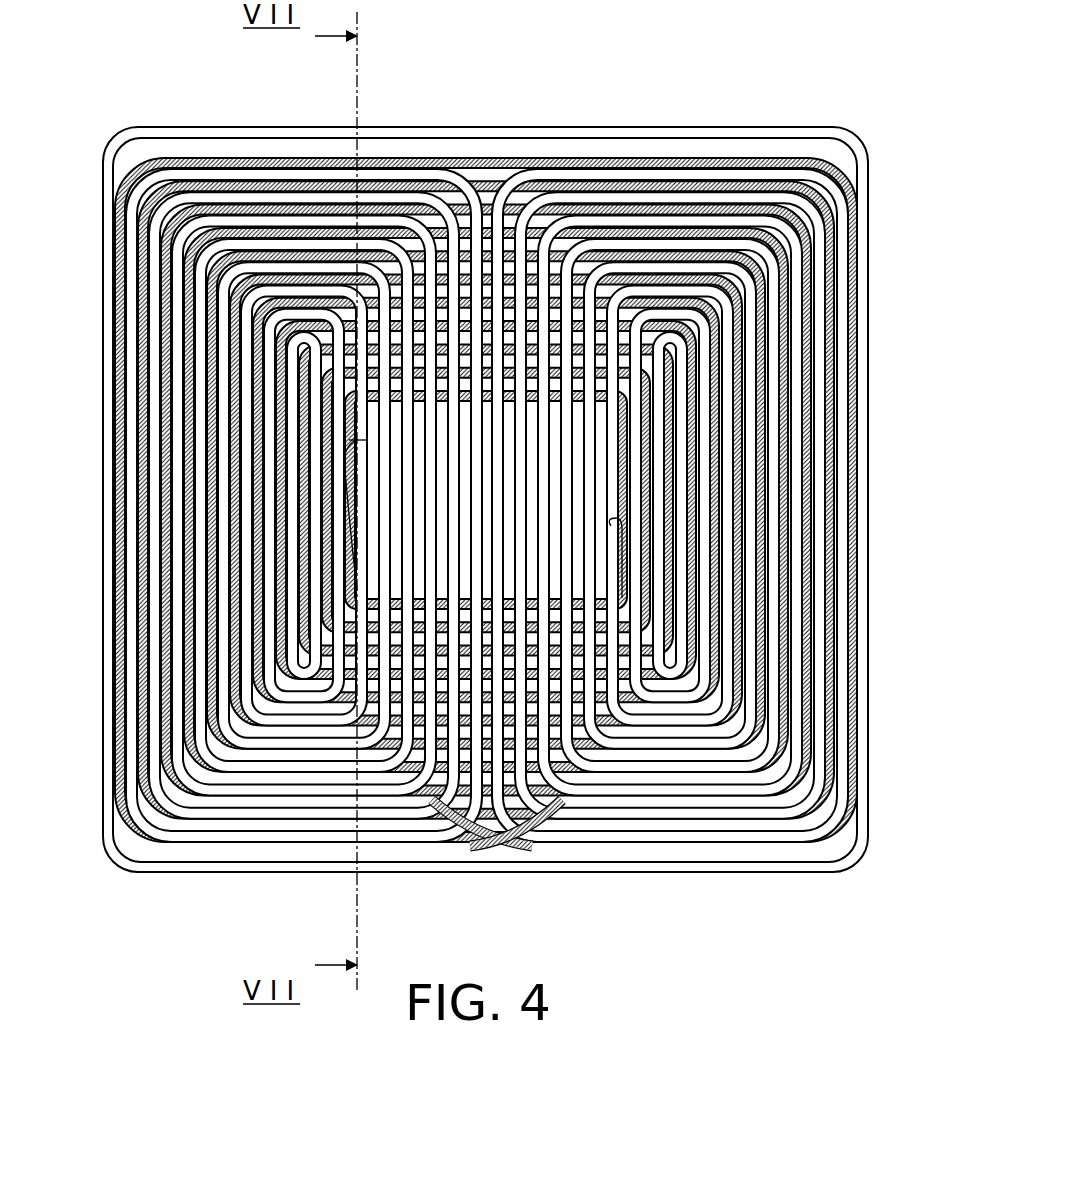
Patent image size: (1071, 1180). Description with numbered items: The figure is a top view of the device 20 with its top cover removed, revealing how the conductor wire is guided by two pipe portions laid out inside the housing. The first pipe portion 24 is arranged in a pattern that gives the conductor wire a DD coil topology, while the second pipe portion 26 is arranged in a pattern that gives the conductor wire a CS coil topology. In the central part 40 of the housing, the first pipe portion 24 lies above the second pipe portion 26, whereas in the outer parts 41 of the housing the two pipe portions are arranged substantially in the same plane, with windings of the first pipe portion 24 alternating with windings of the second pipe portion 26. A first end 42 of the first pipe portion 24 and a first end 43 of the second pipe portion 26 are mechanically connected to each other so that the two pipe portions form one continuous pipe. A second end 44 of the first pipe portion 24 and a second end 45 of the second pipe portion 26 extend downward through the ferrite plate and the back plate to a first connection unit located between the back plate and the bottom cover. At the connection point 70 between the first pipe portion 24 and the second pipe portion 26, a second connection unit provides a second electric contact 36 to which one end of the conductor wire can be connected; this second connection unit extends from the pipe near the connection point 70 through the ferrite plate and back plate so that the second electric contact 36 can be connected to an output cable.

The device 20 is at (674, 78).
The first pipe portion 24 is at (153, 513).
The second pipe portion 26 is at (170, 553).
The second electric contact 36 is at (358, 454).
The central part 40 is at (352, 581).
The outer parts 41 is at (168, 356).
The first end of the first pipe portion 42 is at (362, 443).
The first end of the second pipe portion 43 is at (330, 451).
The second end of the first pipe portion 44 is at (622, 540).
The second end of the second pipe portion 45 is at (487, 846).
The connection point 70 is at (355, 442).